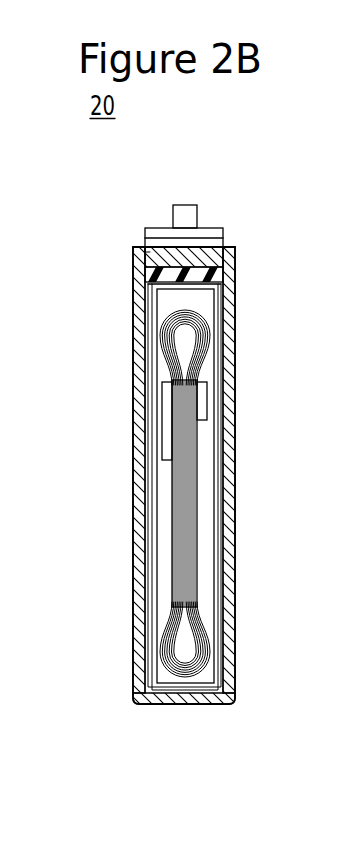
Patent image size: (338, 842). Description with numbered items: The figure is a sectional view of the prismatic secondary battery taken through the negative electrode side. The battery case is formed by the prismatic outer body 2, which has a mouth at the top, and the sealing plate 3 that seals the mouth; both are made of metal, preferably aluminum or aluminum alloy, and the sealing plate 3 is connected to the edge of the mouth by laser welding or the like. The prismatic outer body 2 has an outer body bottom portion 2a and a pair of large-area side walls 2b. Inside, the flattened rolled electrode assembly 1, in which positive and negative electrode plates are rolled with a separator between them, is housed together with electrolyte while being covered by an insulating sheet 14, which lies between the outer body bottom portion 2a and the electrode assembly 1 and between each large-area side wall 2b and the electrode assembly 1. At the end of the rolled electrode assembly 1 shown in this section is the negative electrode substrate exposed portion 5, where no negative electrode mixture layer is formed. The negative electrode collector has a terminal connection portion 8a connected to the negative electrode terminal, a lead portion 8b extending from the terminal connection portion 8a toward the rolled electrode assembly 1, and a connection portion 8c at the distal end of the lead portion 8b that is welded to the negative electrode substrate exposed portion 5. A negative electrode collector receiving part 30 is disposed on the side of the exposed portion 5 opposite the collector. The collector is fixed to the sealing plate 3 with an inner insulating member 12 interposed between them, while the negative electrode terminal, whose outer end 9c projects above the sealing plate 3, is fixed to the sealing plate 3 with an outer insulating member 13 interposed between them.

The flattened rolled electrode assembly 1 is at (191, 493).
The prismatic outer body 2 is at (178, 510).
The outer body bottom portion 2a is at (174, 704).
The large-area side walls 2b is at (137, 500).
The sealing plate 3 is at (198, 258).
The negative electrode substrate exposed portion 5 is at (168, 602).
The terminal connection portion 8a is at (212, 284).
The lead portion 8b is at (152, 313).
The connection portion 8c is at (160, 408).
The external terminal 9c is at (186, 211).
The inner insulating member 12 is at (208, 274).
The outer insulating member 13 is at (146, 249).
The insulating sheet 14 is at (216, 374).
The negative electrode collector receiving part 30 is at (207, 400).